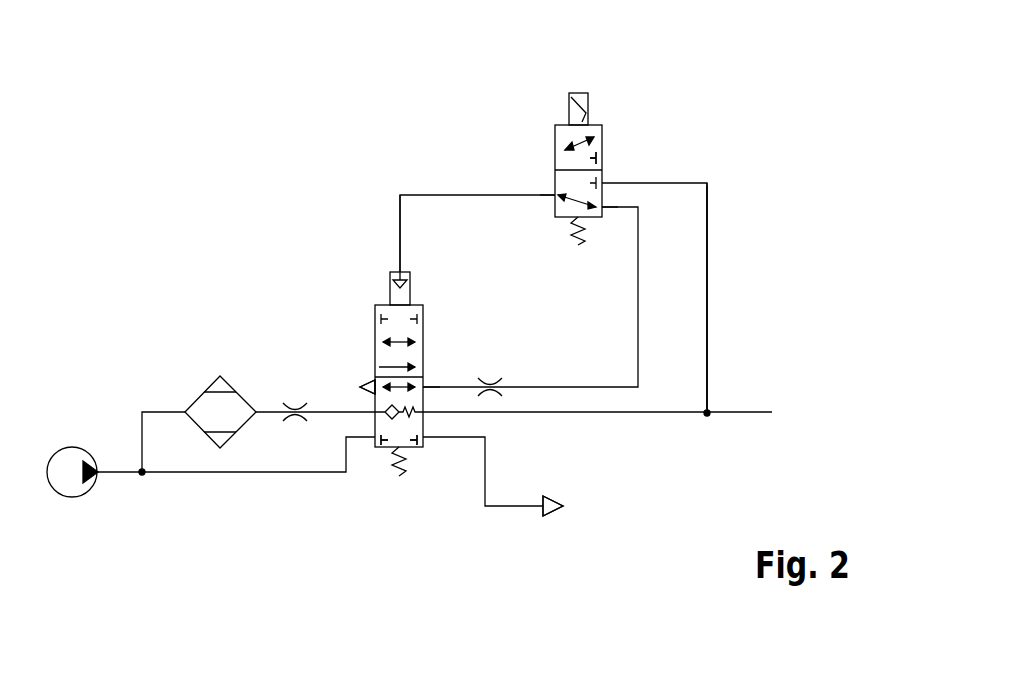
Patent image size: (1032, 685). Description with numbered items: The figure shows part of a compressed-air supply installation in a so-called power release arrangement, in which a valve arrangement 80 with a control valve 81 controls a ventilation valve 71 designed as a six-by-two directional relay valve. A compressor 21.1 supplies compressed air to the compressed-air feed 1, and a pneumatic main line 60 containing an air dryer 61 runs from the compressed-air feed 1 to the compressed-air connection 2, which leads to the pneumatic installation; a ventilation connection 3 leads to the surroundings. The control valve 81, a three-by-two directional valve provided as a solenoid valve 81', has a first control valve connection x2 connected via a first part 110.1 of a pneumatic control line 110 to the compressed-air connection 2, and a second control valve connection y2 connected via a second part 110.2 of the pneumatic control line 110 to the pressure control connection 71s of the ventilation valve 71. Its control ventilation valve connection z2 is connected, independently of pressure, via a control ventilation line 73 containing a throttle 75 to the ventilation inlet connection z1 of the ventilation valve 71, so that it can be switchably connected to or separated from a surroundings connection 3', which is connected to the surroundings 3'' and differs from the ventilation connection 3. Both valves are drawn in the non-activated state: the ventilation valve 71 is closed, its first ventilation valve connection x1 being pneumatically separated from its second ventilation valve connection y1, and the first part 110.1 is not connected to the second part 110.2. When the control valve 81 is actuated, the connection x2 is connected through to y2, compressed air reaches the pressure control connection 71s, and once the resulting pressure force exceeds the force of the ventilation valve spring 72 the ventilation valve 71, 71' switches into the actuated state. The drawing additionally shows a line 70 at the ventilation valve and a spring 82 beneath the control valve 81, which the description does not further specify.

The compressed-air feed 1 is at (143, 478).
The compressed-air connection 2 is at (708, 417).
The ventilation connection 3 is at (559, 474).
The surroundings connection 3' is at (360, 350).
The surroundings 3'' is at (244, 237).
The compressor 21.1 is at (72, 446).
The pneumatic main line 60 is at (143, 408).
The air dryer 61 is at (219, 374).
The supply line 70 is at (275, 477).
The ventilation valve 71 is at (361, 376).
The ventilation valve 71' is at (381, 267).
The pressure control connection 71s is at (410, 300).
The ventilation valve spring 72 is at (399, 480).
The control ventilation line 73 is at (637, 358).
The throttle 75 is at (490, 382).
The valve arrangement 80 is at (488, 78).
The control valve 81 is at (561, 131).
The solenoid valve 81' is at (561, 131).
The spring 82 is at (578, 245).
The pneumatic control line 110 is at (682, 172).
The first part of the pneumatic control line 110.1 is at (712, 283).
The second part of the pneumatic control line 110.2 is at (450, 194).
The first ventilation valve connection x1 is at (374, 447).
The second ventilation valve connection y1 is at (426, 447).
The ventilation inlet connection z1 is at (427, 386).
The first control valve connection x2 is at (604, 182).
The second control valve connection y2 is at (554, 195).
The control ventilation valve connection z2 is at (605, 210).